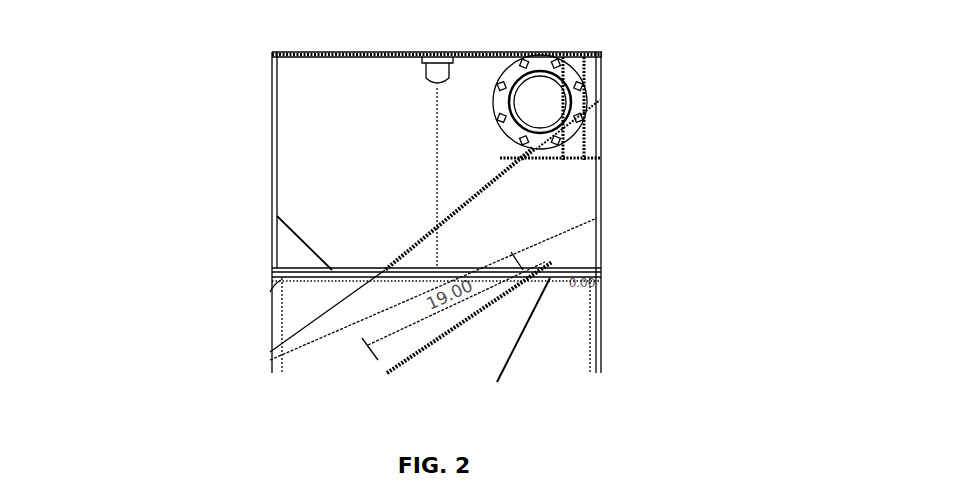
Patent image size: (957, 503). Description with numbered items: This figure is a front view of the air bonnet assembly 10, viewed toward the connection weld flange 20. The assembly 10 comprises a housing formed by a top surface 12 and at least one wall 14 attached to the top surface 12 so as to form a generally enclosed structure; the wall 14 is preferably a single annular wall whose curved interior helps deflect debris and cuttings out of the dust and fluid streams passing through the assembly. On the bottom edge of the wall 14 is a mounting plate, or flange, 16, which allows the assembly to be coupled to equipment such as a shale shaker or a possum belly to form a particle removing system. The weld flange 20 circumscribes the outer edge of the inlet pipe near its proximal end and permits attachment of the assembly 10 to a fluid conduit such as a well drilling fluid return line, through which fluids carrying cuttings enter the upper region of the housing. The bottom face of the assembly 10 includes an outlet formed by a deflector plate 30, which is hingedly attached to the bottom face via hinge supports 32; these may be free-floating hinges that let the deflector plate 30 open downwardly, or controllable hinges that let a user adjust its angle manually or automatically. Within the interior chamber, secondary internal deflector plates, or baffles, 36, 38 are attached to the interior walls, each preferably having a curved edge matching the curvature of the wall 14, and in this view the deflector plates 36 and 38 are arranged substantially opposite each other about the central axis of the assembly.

The air bonnet assembly 10 is at (211, 400).
The top surface 12 is at (327, 53).
The wall 14 is at (272, 146).
The mounting plate 16 is at (572, 263).
The weld flange 20 is at (590, 95).
The deflector plate 30 is at (410, 361).
The hinge supports 32 is at (497, 382).
The secondary internal deflector plate 36 is at (234, 275).
The secondary internal deflector plate 38 is at (597, 218).